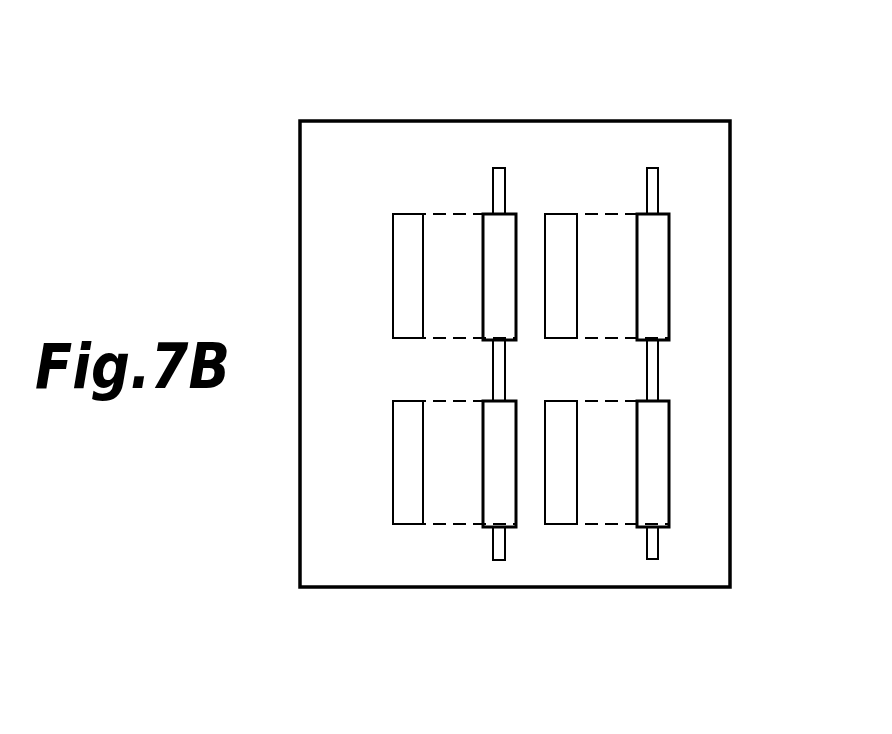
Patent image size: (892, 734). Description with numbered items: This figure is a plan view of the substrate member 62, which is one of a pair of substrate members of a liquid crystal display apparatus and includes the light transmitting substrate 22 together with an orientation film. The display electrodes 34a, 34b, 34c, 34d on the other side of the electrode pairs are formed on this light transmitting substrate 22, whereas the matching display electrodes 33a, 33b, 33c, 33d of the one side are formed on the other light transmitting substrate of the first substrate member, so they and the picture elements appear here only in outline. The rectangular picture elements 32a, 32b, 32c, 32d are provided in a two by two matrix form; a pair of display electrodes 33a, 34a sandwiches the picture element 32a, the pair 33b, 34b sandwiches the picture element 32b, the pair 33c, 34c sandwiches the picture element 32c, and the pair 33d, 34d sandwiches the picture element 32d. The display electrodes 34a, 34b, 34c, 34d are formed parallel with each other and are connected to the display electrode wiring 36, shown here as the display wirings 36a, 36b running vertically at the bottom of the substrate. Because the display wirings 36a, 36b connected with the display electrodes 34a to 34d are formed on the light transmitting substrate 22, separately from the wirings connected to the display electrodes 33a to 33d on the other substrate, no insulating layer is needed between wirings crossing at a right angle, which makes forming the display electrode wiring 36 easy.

The substrate member 62 is at (417, 90).
The light transmitting substrate 22 is at (549, 120).
The picture element 32a is at (435, 300).
The picture element 32b is at (627, 300).
The picture element 32c is at (440, 487).
The picture element 32d is at (622, 443).
The display electrode 33a is at (411, 226).
The display electrode 33b is at (562, 228).
The display electrode 33c is at (404, 428).
The display electrode 33d is at (560, 509).
The display electrode 34a is at (492, 242).
The display electrode 34b is at (658, 238).
The display electrode 34c is at (494, 488).
The display electrode 34d is at (657, 481).
The display wiring 36a is at (506, 553).
The display wiring 36b is at (645, 548).
The display electrode wiring 36 is at (572, 616).